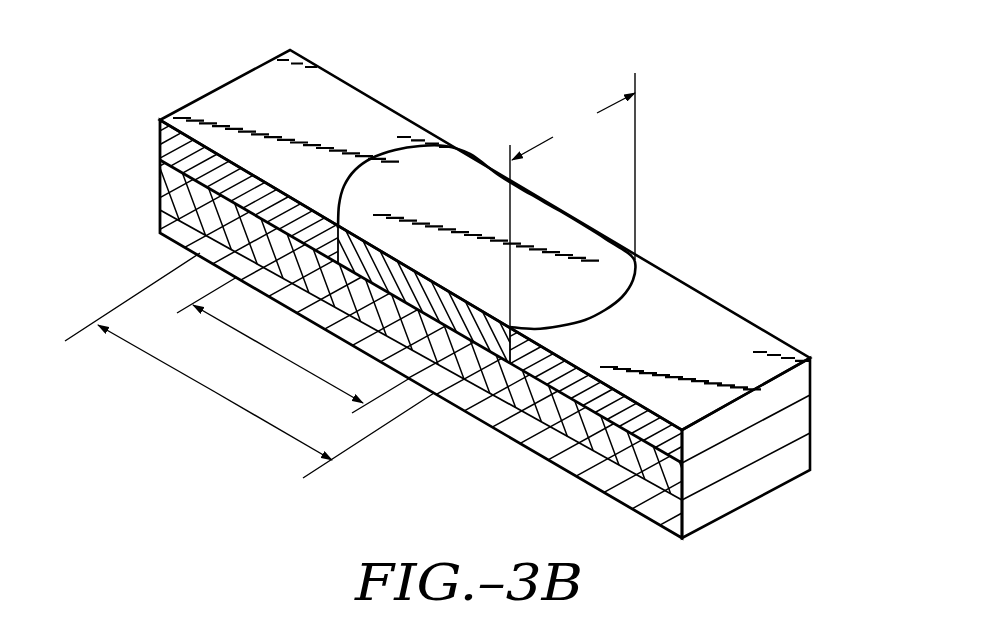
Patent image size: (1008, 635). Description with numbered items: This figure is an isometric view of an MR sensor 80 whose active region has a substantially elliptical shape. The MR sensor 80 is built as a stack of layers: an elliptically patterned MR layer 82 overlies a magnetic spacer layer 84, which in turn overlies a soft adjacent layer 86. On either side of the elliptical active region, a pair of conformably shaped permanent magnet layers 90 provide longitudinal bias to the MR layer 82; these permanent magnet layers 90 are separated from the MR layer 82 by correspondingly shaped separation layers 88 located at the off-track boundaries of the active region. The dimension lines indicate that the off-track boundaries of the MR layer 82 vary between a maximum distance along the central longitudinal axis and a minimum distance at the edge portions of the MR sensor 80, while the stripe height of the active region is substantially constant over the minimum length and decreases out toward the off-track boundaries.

The MR sensor 80 is at (166, 429).
The MR layer 82 is at (462, 193).
The magnetic spacer layer 84 is at (161, 183).
The soft adjacent layer 86 is at (160, 211).
The separation layers 88 is at (190, 240).
The permanent magnet layers 90 is at (318, 105).